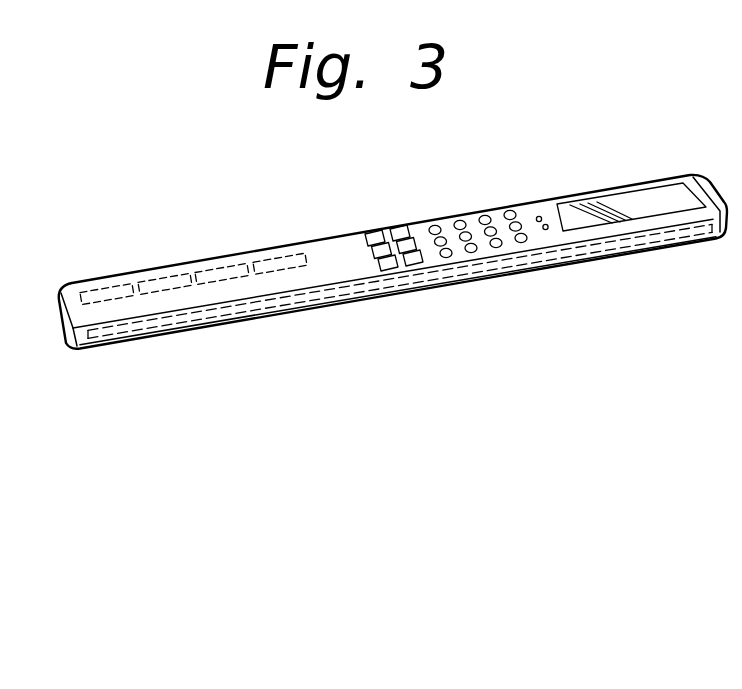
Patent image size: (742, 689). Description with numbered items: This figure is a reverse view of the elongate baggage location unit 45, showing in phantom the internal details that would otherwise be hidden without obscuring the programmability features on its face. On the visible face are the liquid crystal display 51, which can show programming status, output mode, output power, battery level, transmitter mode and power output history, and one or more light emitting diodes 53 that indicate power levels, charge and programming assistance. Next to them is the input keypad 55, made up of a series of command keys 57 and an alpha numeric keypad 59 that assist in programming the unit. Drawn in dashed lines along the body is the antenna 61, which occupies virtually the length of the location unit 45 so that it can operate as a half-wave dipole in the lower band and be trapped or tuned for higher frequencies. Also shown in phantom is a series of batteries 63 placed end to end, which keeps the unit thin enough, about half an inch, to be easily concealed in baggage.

The location unit 45 is at (83, 255).
The liquid crystal display 51 is at (630, 203).
The light emitting diodes 53 is at (546, 224).
The input keypad 55 is at (380, 310).
The command keys 57 is at (352, 226).
The alpha numeric keypad 59 is at (418, 212).
The antenna 61 is at (240, 316).
The batteries 63 is at (283, 258).